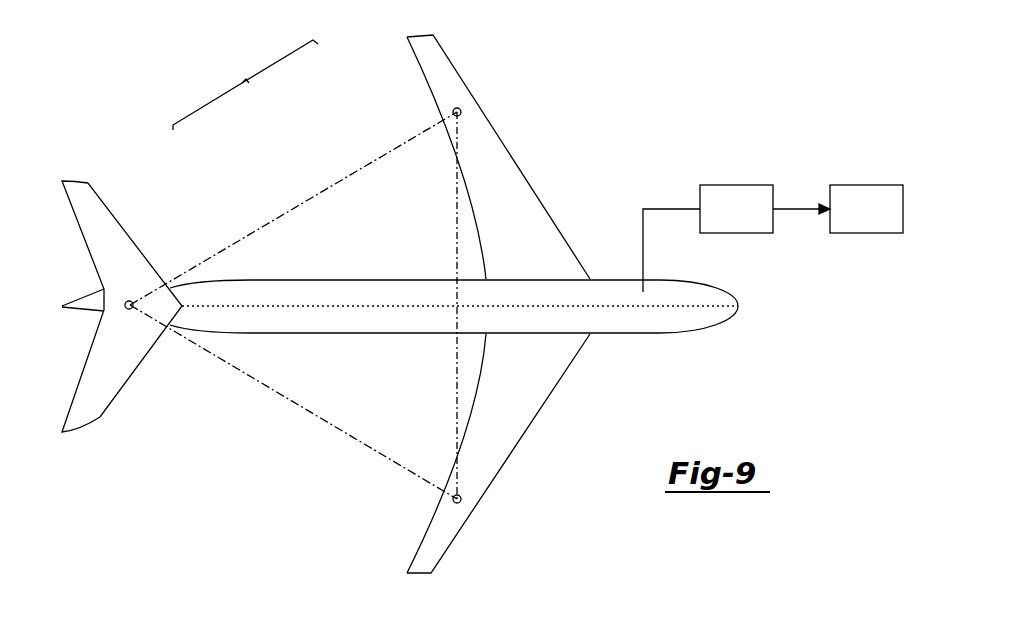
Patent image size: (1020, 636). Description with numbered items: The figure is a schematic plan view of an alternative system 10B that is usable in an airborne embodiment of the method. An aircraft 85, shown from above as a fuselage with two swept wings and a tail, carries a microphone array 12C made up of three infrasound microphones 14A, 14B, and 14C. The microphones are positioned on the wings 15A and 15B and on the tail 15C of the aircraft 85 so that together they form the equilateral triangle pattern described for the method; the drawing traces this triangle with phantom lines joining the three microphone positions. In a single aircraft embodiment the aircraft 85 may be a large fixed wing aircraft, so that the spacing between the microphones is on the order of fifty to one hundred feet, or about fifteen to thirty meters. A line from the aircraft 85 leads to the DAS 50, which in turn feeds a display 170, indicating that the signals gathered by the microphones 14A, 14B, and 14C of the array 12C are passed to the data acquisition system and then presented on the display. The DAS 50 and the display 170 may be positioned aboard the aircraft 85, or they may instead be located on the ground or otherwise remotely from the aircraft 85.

The alternative system 10B is at (655, 71).
The microphone array 12C is at (245, 85).
The microphone 14A is at (462, 500).
The microphone 14B is at (462, 113).
The microphone 14C is at (124, 302).
The wing 15A is at (511, 412).
The wing 15B is at (514, 199).
The tail 15C is at (113, 228).
The DAS 50 is at (743, 221).
The aircraft 85 is at (340, 281).
The display 170 is at (880, 221).